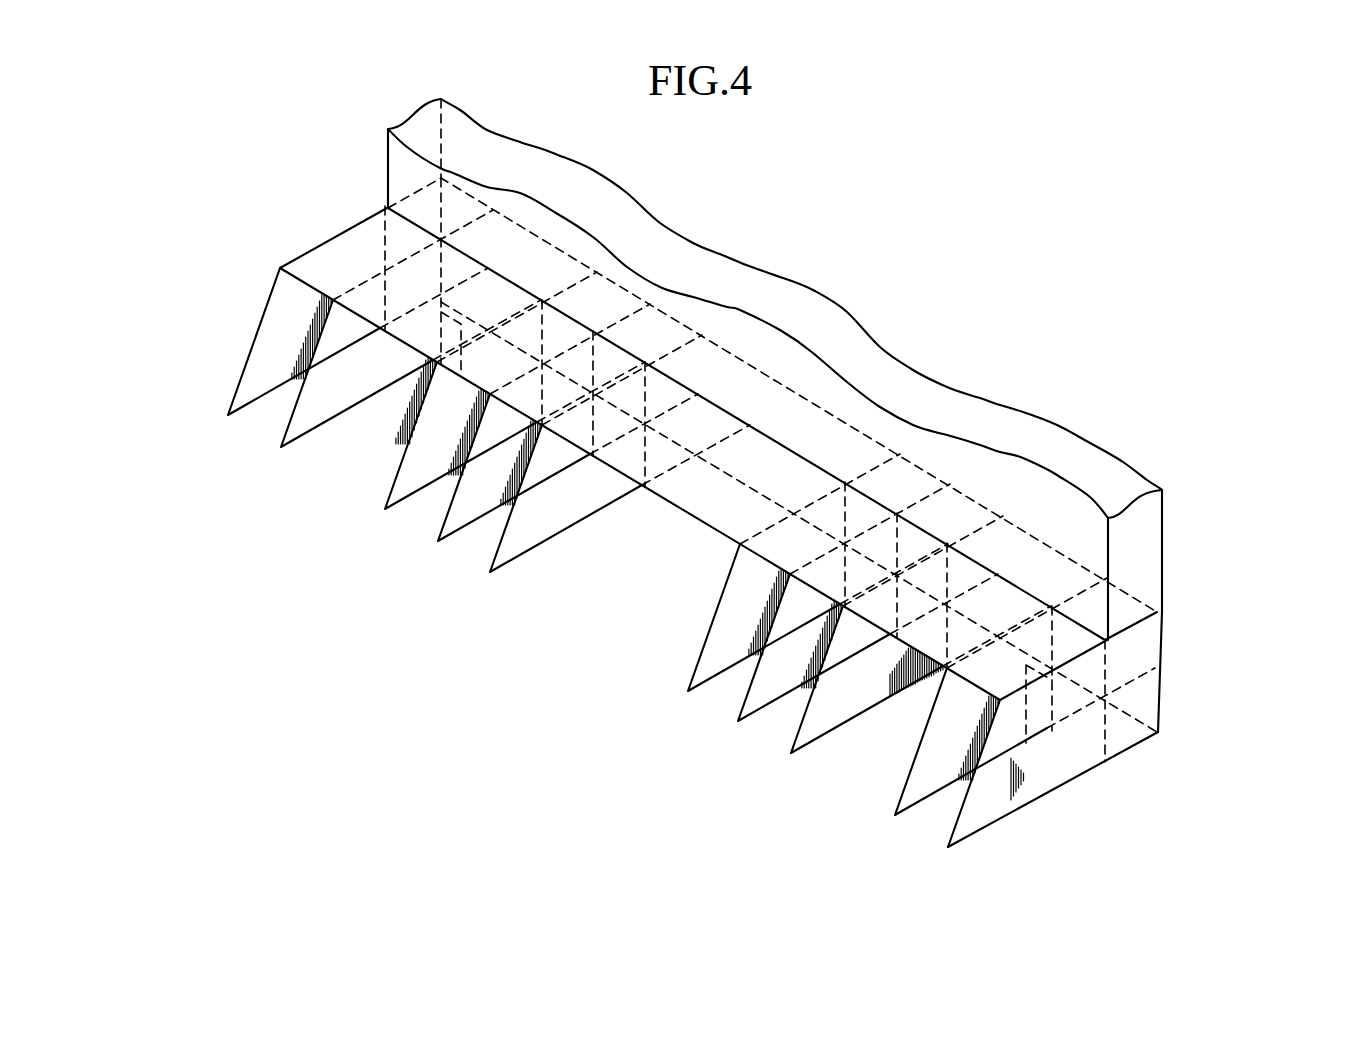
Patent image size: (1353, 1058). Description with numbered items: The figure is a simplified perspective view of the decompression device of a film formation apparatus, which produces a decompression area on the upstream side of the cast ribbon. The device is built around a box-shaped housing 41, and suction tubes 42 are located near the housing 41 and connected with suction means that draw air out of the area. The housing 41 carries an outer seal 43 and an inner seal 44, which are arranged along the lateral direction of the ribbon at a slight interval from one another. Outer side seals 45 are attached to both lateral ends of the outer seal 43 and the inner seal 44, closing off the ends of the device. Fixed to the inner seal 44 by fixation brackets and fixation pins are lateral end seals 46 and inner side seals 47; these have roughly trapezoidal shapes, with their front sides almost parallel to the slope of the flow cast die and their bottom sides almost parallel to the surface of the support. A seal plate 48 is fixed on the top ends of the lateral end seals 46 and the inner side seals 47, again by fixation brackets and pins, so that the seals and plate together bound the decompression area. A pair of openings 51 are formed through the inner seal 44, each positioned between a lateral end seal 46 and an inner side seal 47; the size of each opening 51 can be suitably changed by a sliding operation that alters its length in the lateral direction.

The housing 41 is at (1163, 632).
The suction tubes 42 is at (1163, 537).
The outer seal 43 is at (1135, 680).
The inner seal 44 is at (1085, 722).
The outer side seals 45 is at (236, 390).
The lateral end seals 46 is at (297, 440).
The inner side seals 47 is at (393, 510).
The seal plate 48 is at (732, 510).
The openings 51 is at (437, 368).